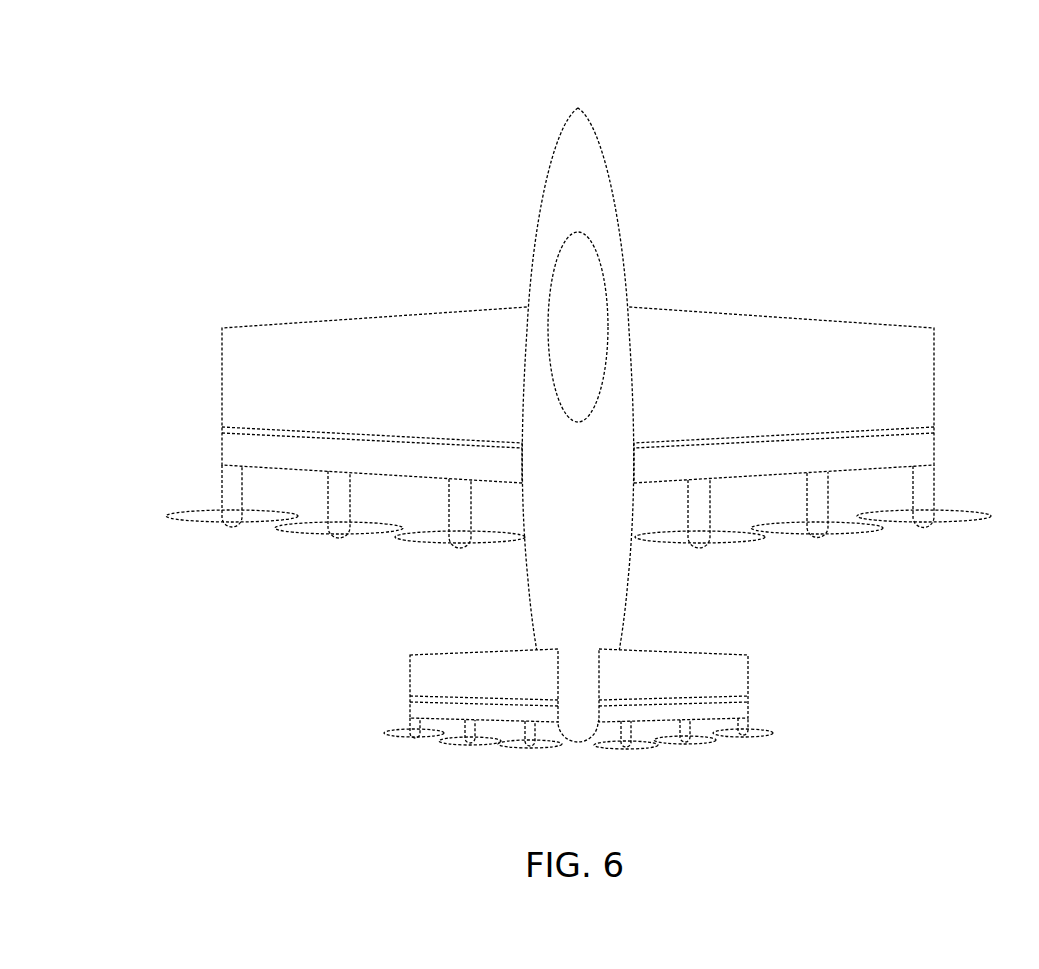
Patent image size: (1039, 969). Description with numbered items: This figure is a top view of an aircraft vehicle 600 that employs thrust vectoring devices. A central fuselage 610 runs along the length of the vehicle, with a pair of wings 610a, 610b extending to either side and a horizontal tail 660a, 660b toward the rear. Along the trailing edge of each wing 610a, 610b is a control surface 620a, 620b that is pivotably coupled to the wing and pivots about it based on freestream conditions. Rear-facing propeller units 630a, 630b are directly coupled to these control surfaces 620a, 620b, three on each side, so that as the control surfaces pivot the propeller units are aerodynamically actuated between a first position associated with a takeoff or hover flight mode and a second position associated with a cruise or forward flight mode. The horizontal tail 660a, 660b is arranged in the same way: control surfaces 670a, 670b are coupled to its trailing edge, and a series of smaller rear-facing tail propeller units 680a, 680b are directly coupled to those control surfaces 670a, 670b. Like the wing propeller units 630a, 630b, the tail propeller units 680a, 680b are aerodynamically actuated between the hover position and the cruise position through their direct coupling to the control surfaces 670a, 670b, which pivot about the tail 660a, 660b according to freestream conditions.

The aircraft vehicle 600 is at (618, 92).
The fuselage 610 is at (515, 616).
The wing 610a is at (422, 396).
The wing 610b is at (790, 396).
The control surface 620a is at (422, 467).
The control surface 620b is at (790, 467).
The propeller unit 630a is at (224, 545).
The propeller unit 630b is at (701, 566).
The horizontal tail 660a is at (520, 691).
The horizontal tail 660b is at (691, 691).
The control surface 670a is at (393, 703).
The control surface 670b is at (765, 703).
The tail propeller unit 680a is at (401, 759).
The tail propeller unit 680b is at (634, 766).